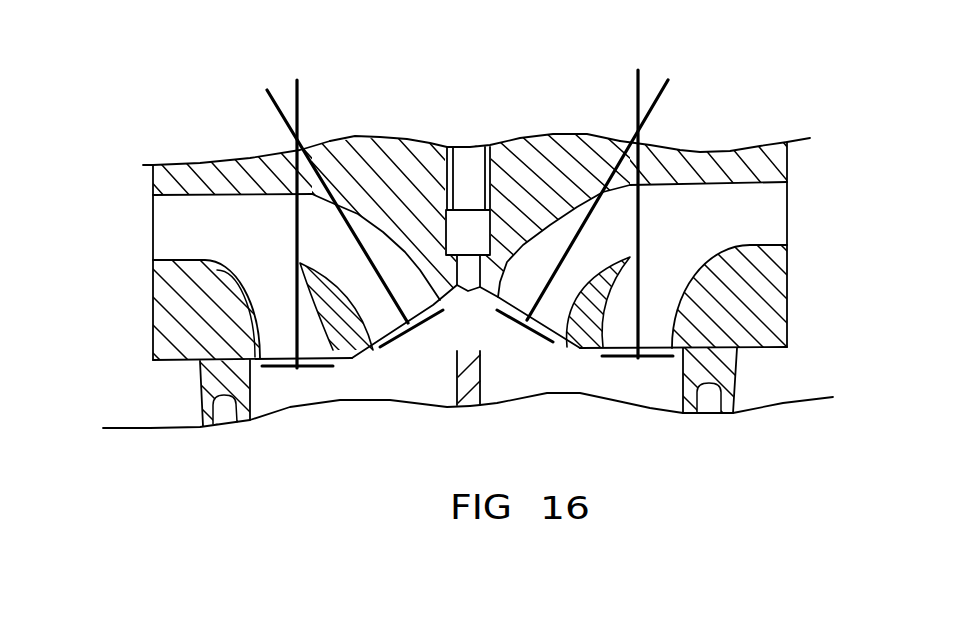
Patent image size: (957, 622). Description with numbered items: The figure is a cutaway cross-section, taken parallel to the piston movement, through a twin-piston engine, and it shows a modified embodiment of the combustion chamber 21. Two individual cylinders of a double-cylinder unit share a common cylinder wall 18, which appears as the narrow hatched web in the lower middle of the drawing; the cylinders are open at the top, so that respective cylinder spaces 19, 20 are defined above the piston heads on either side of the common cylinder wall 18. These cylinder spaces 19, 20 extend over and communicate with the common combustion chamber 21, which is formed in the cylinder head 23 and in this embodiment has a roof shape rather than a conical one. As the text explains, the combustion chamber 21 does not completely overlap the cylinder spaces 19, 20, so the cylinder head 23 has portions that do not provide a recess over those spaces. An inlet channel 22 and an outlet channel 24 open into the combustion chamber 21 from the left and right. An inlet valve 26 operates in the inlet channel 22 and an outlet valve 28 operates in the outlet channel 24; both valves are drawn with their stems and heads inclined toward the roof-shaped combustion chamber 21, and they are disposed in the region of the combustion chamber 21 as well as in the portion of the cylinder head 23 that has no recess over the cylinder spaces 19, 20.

The common cylinder wall 18 is at (472, 377).
The cylinder space 19 is at (651, 380).
The cylinder space 20 is at (286, 395).
The common combustion chamber 21 is at (455, 334).
The inlet channel 22 is at (178, 218).
The cylinder head 23 is at (540, 150).
The outlet channel 24 is at (755, 207).
The inlet valve 26 is at (293, 74).
The outlet valve 28 is at (672, 73).